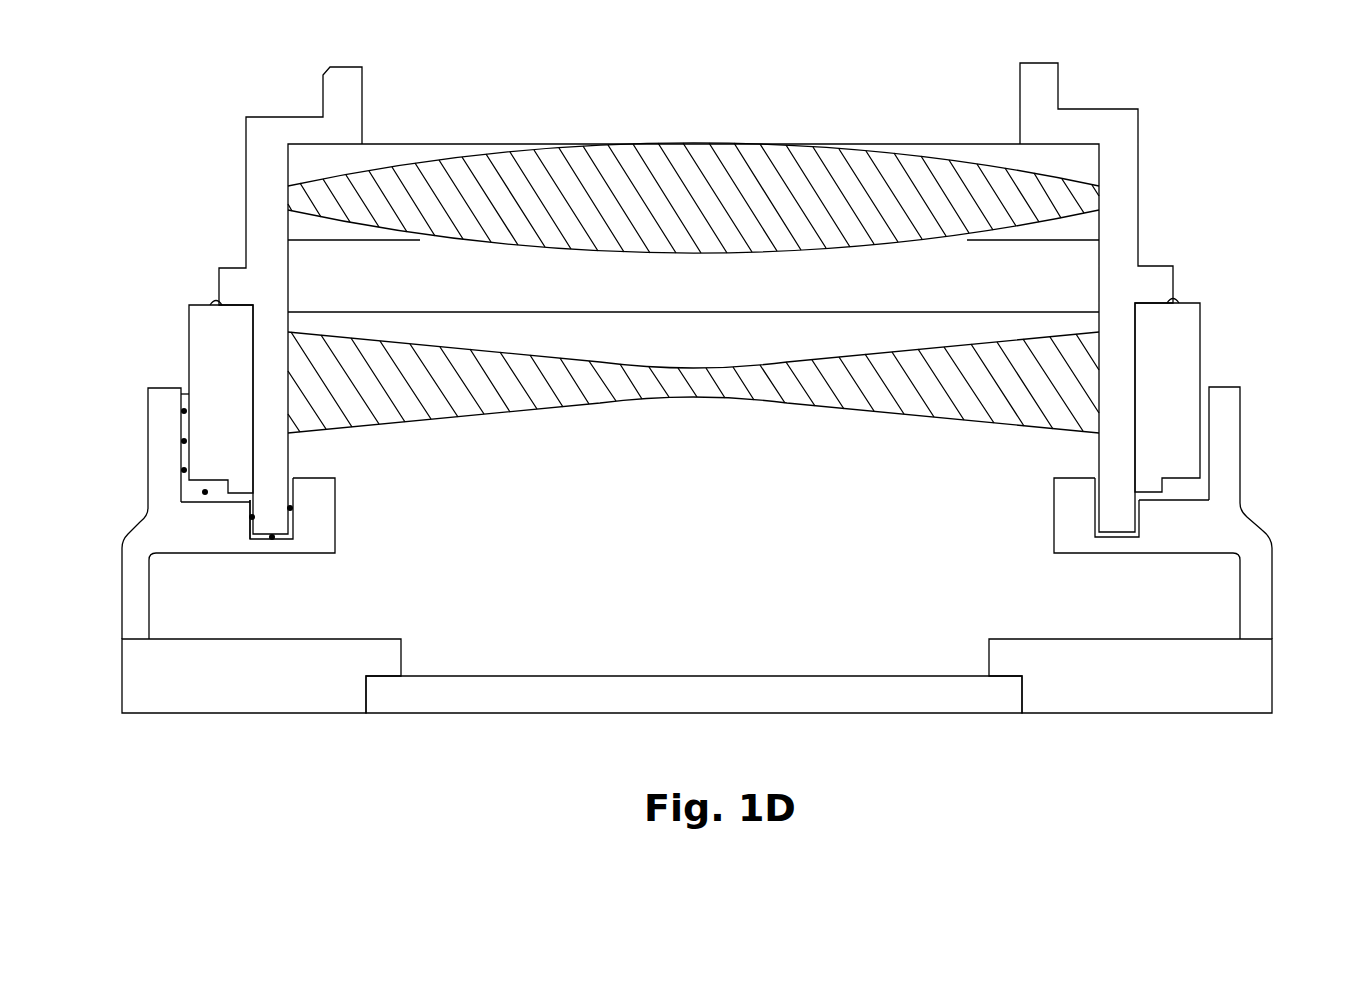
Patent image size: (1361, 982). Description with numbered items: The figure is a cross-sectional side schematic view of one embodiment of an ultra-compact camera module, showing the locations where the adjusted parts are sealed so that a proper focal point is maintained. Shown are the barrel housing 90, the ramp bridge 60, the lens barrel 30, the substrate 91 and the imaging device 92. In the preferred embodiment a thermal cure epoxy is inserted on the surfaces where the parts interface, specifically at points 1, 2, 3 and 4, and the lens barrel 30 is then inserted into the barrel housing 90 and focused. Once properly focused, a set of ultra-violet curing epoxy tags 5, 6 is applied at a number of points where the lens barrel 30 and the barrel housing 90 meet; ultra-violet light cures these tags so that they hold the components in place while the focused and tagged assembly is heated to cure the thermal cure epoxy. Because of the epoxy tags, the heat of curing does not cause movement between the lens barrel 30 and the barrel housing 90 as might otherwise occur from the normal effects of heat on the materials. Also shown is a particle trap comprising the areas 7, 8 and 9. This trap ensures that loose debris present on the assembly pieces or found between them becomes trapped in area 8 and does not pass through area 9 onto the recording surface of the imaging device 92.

The lens barrel 30 is at (246, 155).
The ramp bridge 60 is at (198, 304).
The ultra-violet curing epoxy tag 5 is at (219, 303).
The ultra-violet curing epoxy tag 6 is at (188, 386).
The thermal cure epoxy insertion point 1 is at (184, 411).
The thermal cure epoxy insertion point 2 is at (184, 441).
The thermal cure epoxy insertion point 3 is at (184, 470).
The thermal cure epoxy insertion point 4 is at (205, 492).
The particle trap area 7 is at (252, 516).
The particle trap area 8 is at (272, 538).
The particle trap area 9 is at (291, 508).
The barrel housing 90 is at (122, 597).
The substrate 91 is at (1272, 677).
The imaging device 92 is at (883, 675).